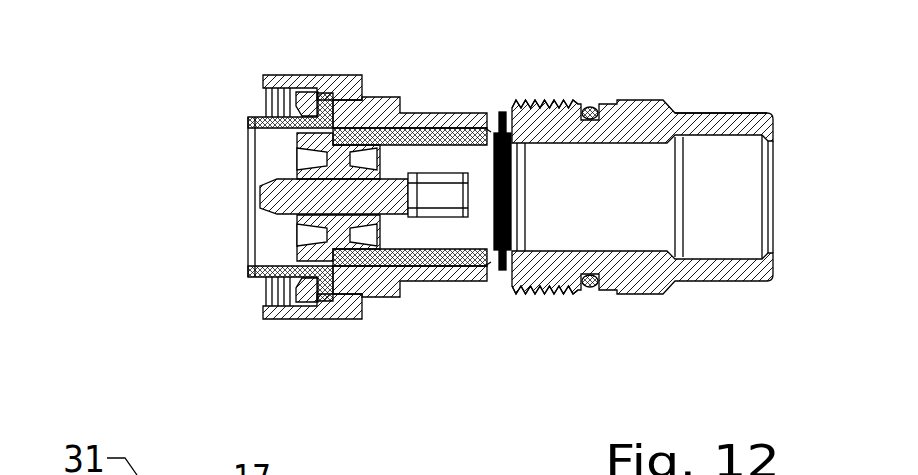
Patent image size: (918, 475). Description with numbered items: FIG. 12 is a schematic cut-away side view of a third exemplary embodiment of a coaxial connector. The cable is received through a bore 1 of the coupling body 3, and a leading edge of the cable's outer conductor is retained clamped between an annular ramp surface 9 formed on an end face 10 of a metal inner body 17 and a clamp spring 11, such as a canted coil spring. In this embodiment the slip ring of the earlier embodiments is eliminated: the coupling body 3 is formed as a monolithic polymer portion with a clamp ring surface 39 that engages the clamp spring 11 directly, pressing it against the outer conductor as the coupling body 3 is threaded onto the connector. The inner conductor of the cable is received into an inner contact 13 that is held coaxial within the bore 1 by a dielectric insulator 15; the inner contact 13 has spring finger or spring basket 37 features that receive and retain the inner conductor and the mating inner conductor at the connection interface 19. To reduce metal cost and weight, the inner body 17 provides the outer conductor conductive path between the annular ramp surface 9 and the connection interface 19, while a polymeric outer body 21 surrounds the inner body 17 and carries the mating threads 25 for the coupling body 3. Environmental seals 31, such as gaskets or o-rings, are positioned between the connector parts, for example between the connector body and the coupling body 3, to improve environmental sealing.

The bore 1 is at (642, 248).
The coupling body 3 is at (722, 56).
The annular ramp surface 9 is at (454, 262).
The end face 10 is at (515, 265).
The clamp spring 11 is at (457, 66).
The inner contact 13 is at (257, 160).
The dielectric insulator 15 is at (243, 215).
The inner body 17 is at (271, 236).
The connection interface 19 is at (181, 197).
The outer body 21 is at (398, 247).
The mating threads 25 is at (582, 340).
The environmental seal 31 is at (449, 151).
The spring basket 37 is at (395, 108).
The clamp ring surface 39 is at (567, 54).